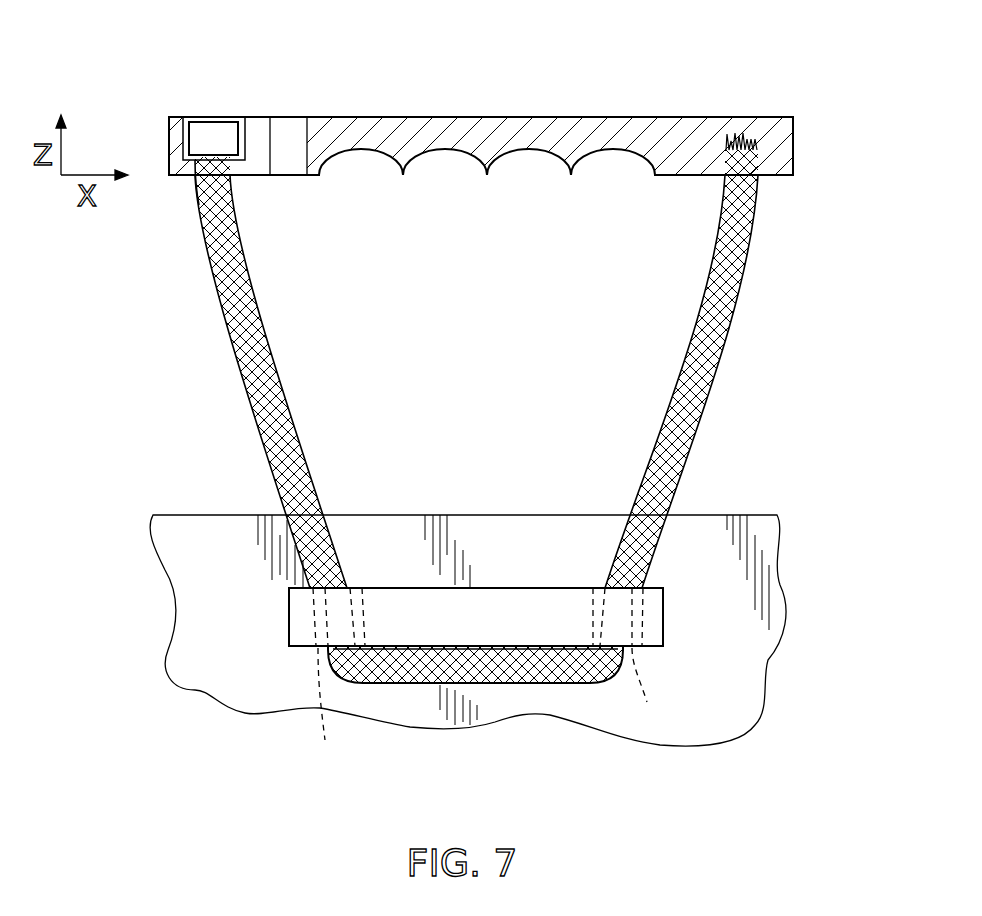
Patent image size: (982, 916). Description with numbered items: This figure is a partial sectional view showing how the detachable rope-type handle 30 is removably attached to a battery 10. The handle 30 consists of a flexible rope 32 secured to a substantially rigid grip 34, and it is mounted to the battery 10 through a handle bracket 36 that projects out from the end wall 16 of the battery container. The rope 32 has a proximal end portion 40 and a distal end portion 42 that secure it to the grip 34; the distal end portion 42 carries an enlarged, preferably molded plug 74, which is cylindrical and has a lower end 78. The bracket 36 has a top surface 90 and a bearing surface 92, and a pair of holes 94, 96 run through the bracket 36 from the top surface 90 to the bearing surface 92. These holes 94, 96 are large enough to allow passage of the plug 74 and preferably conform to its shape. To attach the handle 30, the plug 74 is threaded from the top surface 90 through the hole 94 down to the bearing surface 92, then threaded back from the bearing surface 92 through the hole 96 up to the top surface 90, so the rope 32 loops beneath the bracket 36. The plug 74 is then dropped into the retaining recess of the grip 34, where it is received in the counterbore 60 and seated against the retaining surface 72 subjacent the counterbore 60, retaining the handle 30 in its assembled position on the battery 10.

The battery 10 is at (165, 530).
The end wall 16 is at (732, 702).
The rope-type handle 30 is at (508, 323).
The flexible rope 32 is at (508, 389).
The grip 34 is at (476, 147).
The handle bracket 36 is at (425, 610).
The proximal end portion 40 is at (758, 168).
The distal end portion 42 is at (262, 182).
The counterbore 60 is at (185, 118).
The retaining surface 72 is at (248, 140).
The plug portion 74 is at (215, 136).
The lower end 78 is at (196, 178).
The top surface 90 is at (547, 587).
The bearing surface 92 is at (532, 648).
The hole 94 is at (643, 692).
The hole 96 is at (322, 711).